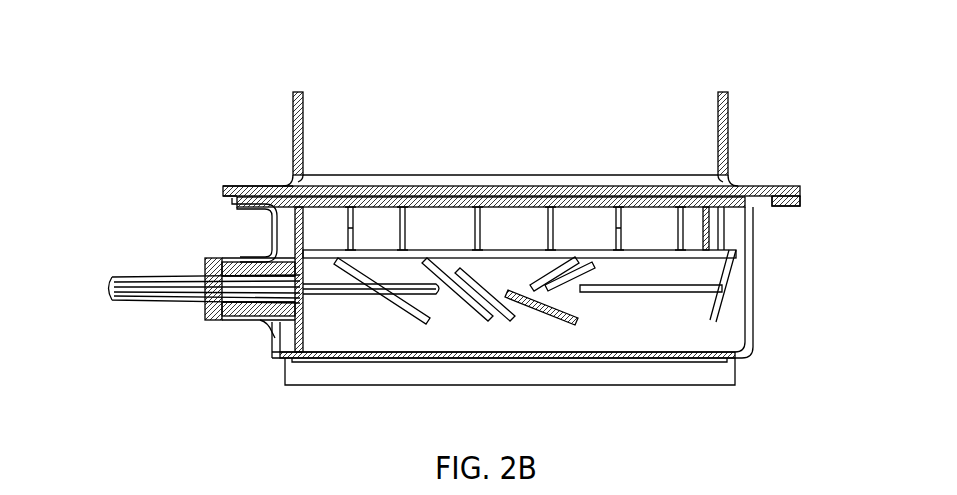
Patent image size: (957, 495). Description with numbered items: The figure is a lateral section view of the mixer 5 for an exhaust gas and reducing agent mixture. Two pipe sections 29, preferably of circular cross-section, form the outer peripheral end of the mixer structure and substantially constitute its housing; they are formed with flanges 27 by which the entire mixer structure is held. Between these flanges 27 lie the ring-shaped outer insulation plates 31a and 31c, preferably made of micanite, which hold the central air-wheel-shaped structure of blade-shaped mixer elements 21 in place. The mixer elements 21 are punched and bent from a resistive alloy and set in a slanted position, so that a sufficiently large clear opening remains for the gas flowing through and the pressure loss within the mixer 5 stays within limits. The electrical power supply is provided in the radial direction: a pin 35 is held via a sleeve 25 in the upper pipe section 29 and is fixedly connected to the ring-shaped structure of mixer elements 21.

The mixer 5 is at (769, 86).
The mixer elements 21 is at (370, 272).
The sleeve 25 is at (246, 322).
The flanges 27 is at (768, 186).
The pipe sections 29 is at (730, 115).
The upper insulation plate 31a is at (258, 186).
The lower insulation plate 31c is at (240, 229).
The pin 35 is at (163, 303).